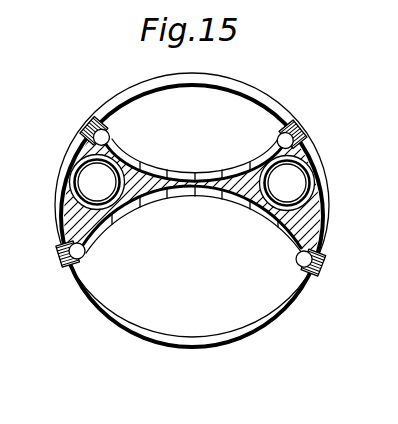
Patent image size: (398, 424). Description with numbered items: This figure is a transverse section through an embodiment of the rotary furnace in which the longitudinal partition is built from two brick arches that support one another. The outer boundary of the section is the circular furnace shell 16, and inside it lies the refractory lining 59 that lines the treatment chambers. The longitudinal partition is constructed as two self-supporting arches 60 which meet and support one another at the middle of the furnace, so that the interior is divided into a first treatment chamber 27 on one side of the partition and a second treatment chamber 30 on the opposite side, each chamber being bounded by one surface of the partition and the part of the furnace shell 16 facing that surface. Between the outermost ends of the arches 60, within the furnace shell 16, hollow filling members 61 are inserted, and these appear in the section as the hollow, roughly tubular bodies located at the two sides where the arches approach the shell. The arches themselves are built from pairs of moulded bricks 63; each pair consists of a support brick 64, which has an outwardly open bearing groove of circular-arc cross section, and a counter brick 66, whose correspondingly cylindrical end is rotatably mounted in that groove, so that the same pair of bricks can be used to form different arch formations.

The furnace shell 16 is at (163, 341).
The refractory lining 59 is at (265, 100).
The hollow filling members 61 is at (90, 178).
The self-supporting arches 60 is at (240, 172).
The moulded bricks 63 is at (189, 208).
The support brick 64 is at (67, 272).
The counter brick 66 is at (86, 253).
The first treatment chamber 27 is at (211, 116).
The second treatment chamber 30 is at (224, 296).